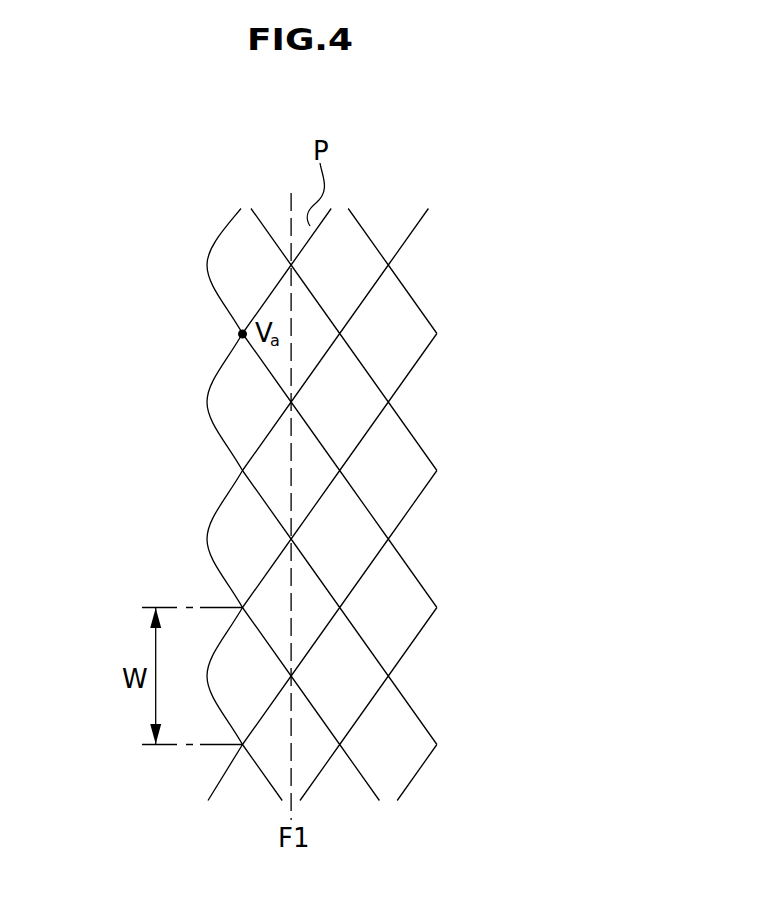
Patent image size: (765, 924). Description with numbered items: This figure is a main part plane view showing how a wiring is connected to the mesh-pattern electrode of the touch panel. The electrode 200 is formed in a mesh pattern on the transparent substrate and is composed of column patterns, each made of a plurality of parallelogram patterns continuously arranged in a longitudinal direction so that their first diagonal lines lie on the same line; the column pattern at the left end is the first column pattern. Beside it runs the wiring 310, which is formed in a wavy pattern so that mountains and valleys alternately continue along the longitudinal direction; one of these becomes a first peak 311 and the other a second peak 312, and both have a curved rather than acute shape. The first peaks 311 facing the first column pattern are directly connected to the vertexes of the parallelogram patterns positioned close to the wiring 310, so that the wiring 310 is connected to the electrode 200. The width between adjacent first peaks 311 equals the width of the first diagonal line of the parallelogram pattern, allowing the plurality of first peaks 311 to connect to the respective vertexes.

The electrode 200 is at (298, 452).
The wiring 310 is at (172, 485).
The first peak 311 is at (239, 334).
The second peak 312 is at (207, 263).